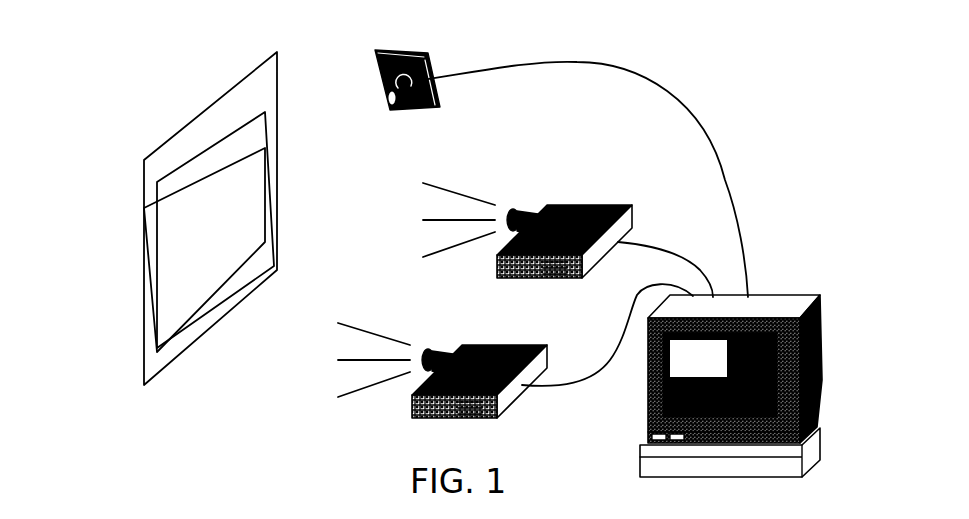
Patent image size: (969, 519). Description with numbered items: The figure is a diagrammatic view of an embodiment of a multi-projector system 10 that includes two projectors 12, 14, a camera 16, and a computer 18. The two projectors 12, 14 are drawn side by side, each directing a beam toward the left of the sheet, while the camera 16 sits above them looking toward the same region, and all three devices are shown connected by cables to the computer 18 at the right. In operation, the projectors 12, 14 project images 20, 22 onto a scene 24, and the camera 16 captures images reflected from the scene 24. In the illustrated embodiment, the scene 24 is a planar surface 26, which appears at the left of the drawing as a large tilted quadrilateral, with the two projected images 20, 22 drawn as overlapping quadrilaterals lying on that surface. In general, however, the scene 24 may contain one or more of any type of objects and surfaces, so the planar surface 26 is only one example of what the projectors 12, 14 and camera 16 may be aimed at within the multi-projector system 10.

The multi-projector system 10 is at (773, 66).
The projector 12 is at (570, 210).
The projector 14 is at (477, 353).
The camera 16 is at (421, 55).
The computer 18 is at (790, 300).
The image 20 is at (237, 270).
The image 22 is at (230, 137).
The scene 24 is at (111, 282).
The planar surface 26 is at (252, 80).